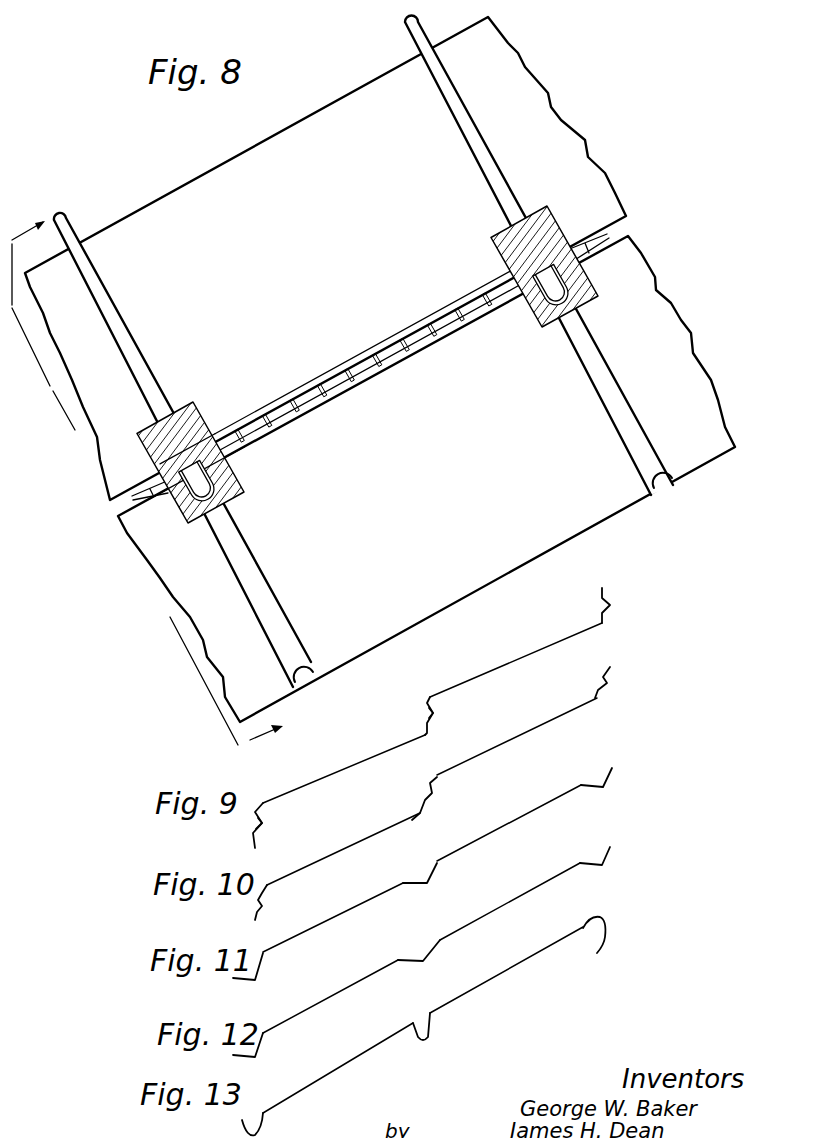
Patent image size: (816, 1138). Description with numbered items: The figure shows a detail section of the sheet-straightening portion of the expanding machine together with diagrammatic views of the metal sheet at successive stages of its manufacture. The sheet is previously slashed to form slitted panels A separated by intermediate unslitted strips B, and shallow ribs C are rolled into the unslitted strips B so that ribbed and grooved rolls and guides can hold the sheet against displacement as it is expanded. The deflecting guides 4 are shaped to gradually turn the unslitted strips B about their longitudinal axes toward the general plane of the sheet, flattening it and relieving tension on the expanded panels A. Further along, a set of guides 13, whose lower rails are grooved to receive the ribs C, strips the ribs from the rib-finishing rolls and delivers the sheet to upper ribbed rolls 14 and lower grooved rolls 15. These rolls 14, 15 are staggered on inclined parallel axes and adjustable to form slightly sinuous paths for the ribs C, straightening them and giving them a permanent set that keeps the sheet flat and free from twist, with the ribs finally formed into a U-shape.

In FIG. 8, the upper ribbed rolls 14 is at (143, 228).
In FIG. 8, the lower grooved rolls 15 is at (518, 556).
In FIG. 8, the guides 13 is at (510, 268).
In FIG. 8, the deflecting guides 4 is at (151, 475).
In FIG. 8, the slitted panels A is at (367, 369).
In FIG. 9, the slitted panels A is at (360, 764).
In FIG. 10, the slitted panels A is at (363, 836).
In FIG. 11, the slitted panels A is at (360, 907).
In FIG. 12, the slitted panels A is at (337, 993).
In FIG. 13, the slitted panels A is at (323, 1073).
In FIG. 8, the unslitted strips B is at (590, 284).
In FIG. 9, the unslitted strips B is at (256, 843).
In FIG. 10, the unslitted strips B is at (257, 917).
In FIG. 11, the unslitted strips B is at (257, 970).
In FIG. 12, the unslitted strips B is at (257, 1050).
In FIG. 13, the unslitted strips B is at (260, 1127).
In FIG. 9, the shallow ribs C is at (263, 827).